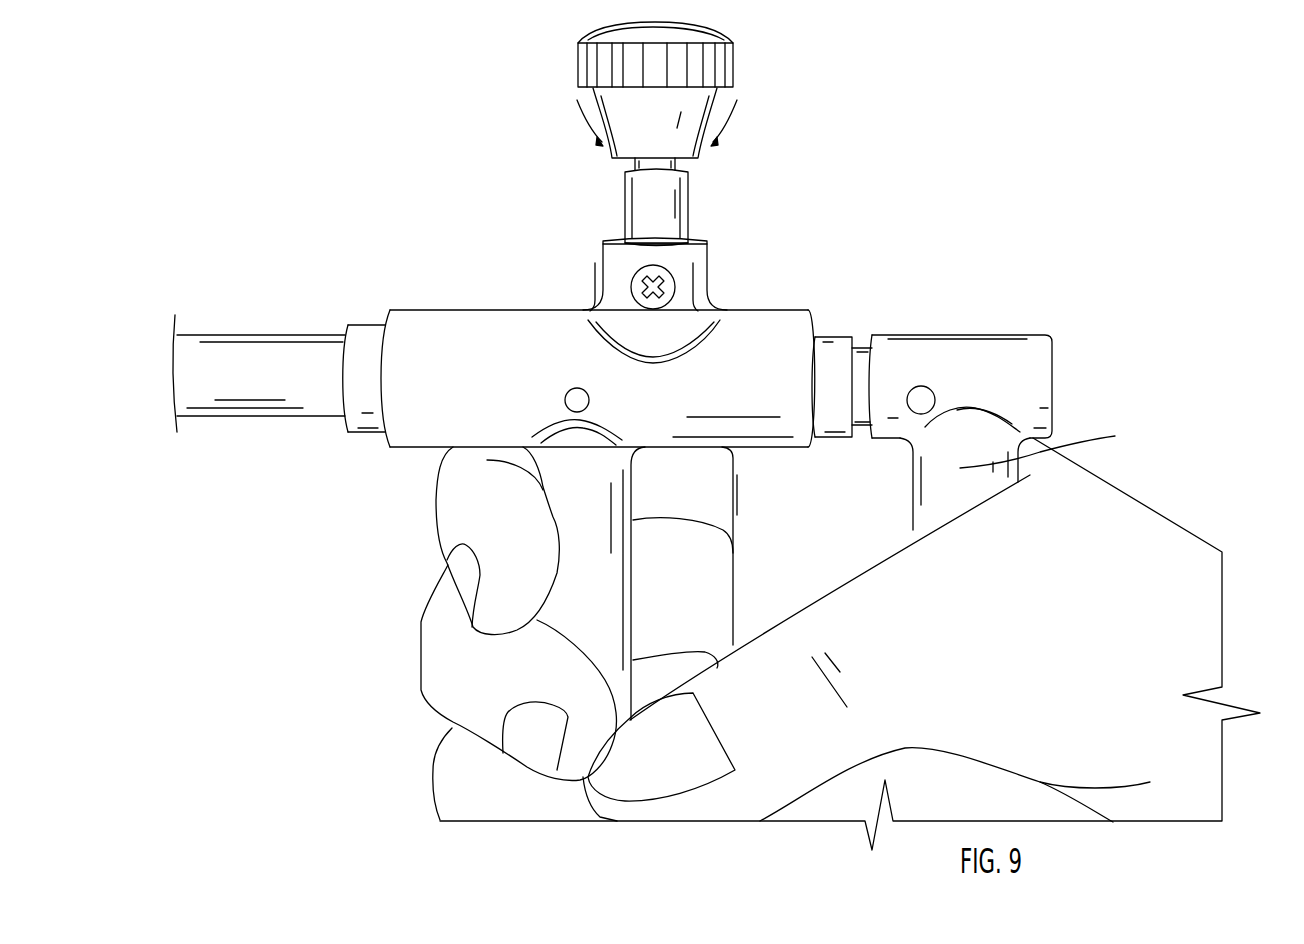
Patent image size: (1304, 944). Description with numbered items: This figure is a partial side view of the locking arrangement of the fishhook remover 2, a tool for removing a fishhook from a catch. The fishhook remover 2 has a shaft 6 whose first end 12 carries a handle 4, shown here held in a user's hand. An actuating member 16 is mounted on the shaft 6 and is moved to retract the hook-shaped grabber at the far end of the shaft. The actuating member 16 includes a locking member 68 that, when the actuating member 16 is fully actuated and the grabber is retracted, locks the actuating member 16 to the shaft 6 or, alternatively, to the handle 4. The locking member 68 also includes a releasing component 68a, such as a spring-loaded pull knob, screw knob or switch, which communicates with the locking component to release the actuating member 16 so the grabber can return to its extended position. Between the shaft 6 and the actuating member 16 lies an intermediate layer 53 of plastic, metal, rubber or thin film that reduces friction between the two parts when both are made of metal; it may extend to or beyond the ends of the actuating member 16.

The fishhook remover 2 is at (437, 189).
The handle 4 is at (1050, 446).
The shaft 6 is at (248, 375).
The first end 12 is at (1018, 370).
The actuating member 16 is at (485, 425).
The intermediate layer 53 is at (370, 338).
The locking member 68 is at (653, 207).
The releasing component 68a is at (670, 33).